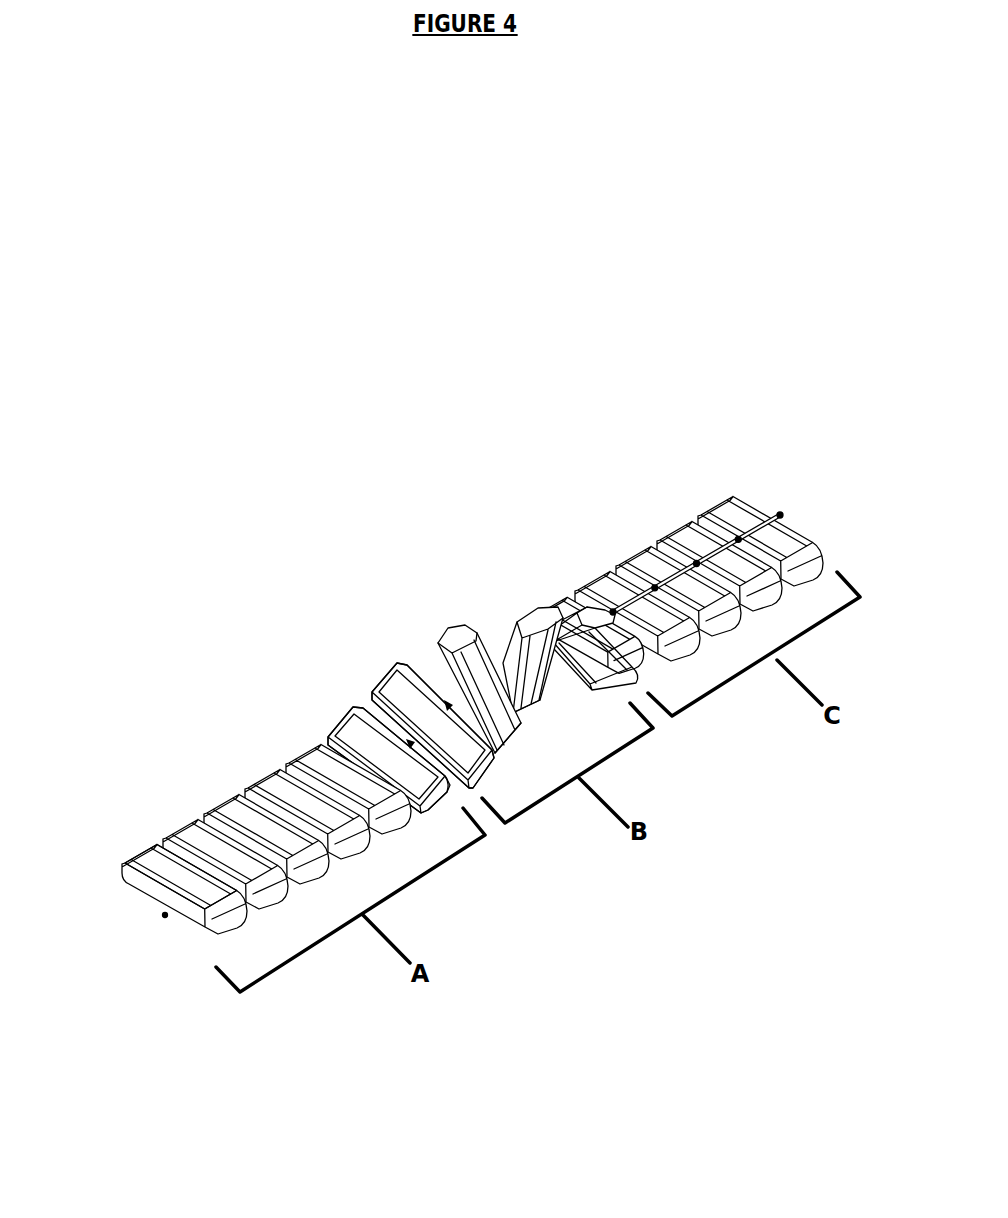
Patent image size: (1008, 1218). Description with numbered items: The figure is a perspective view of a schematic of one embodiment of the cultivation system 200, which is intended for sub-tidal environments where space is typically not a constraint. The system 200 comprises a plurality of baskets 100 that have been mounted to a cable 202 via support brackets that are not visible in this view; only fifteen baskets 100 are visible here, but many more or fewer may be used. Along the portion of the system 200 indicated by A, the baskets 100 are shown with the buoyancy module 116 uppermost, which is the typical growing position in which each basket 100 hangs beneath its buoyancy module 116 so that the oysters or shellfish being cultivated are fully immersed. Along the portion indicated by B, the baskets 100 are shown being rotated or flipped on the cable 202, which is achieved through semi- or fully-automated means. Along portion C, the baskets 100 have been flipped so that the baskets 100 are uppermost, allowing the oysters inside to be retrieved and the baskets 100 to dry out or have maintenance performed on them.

The basket 100 is at (461, 695).
The buoyancy module 116 is at (158, 860).
The cultivation system 200 is at (461, 697).
The cable 202 is at (753, 531).